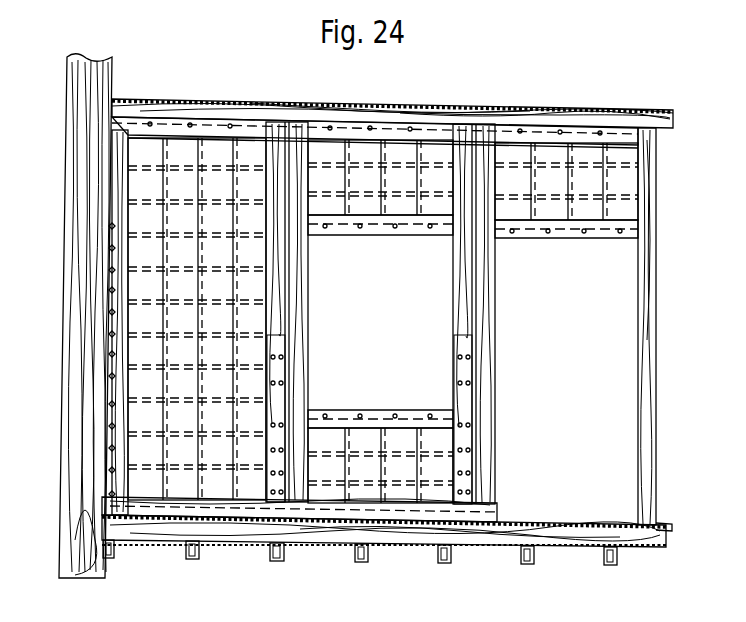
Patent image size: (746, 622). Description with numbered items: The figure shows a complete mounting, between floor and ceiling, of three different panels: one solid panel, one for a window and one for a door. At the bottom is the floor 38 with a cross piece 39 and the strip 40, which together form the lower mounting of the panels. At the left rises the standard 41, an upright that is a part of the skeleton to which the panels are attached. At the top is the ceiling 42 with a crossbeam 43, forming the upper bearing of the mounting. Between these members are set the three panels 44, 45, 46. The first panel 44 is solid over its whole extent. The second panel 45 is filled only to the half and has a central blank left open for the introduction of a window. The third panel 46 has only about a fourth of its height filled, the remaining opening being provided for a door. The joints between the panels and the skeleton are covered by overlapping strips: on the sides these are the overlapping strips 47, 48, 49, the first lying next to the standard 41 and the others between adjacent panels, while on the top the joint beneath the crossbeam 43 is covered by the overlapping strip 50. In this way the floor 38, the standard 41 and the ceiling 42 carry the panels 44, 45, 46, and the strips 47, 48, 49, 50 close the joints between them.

The floor 38 is at (384, 517).
The cross piece 39 is at (360, 562).
The strip 40 is at (679, 509).
The standard 41 is at (124, 329).
The ceiling 42 is at (392, 90).
The crossbeam 43 is at (392, 98).
The panel 44 is at (198, 284).
The panel 45 is at (399, 285).
The panel 46 is at (575, 296).
The overlapping strip 47 is at (107, 367).
The overlapping strip 48 is at (330, 312).
The overlapping strip 49 is at (509, 314).
The overlapping strip 50 is at (375, 108).